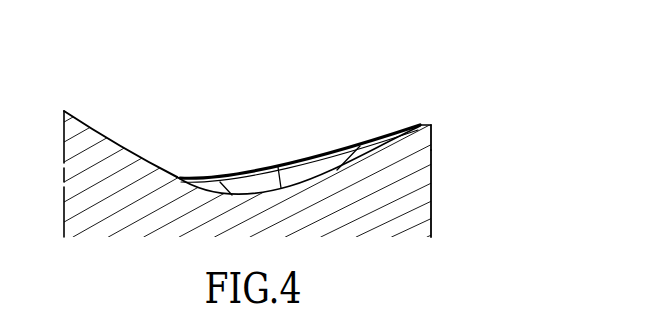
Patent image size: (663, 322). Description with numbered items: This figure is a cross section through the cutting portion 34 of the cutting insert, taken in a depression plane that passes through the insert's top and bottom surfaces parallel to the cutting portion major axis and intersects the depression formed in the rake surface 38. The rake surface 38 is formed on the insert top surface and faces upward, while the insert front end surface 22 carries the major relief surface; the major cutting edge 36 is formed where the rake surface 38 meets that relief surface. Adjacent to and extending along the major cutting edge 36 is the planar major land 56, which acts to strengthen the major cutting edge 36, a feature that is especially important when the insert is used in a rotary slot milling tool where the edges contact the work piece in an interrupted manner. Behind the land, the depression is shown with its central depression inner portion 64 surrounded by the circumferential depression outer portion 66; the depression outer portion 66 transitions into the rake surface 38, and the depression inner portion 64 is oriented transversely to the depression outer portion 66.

The insert front end surface 22 is at (432, 187).
The cutting portion 34 is at (527, 103).
The major cutting edge 36 is at (432, 125).
The rake surface 38 is at (137, 110).
The major land 56 is at (430, 124).
The depression inner portion 64 is at (275, 165).
The depression outer portion 66 is at (180, 177).